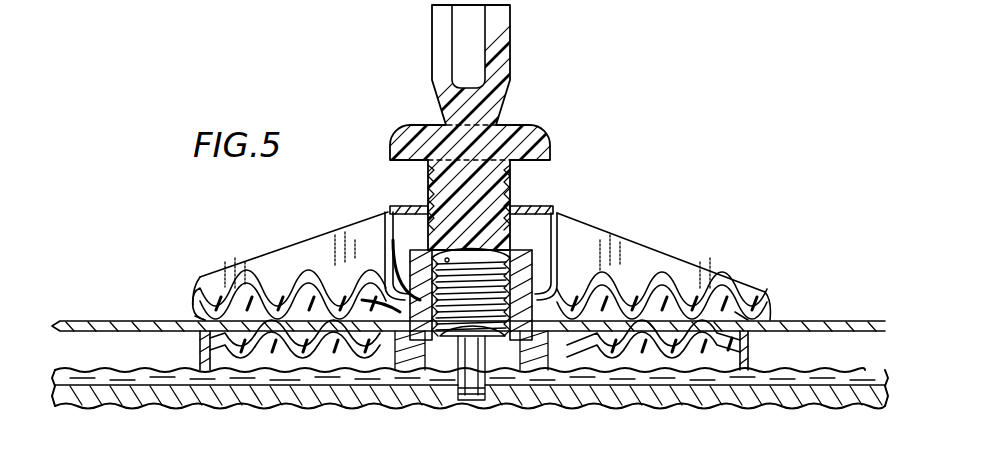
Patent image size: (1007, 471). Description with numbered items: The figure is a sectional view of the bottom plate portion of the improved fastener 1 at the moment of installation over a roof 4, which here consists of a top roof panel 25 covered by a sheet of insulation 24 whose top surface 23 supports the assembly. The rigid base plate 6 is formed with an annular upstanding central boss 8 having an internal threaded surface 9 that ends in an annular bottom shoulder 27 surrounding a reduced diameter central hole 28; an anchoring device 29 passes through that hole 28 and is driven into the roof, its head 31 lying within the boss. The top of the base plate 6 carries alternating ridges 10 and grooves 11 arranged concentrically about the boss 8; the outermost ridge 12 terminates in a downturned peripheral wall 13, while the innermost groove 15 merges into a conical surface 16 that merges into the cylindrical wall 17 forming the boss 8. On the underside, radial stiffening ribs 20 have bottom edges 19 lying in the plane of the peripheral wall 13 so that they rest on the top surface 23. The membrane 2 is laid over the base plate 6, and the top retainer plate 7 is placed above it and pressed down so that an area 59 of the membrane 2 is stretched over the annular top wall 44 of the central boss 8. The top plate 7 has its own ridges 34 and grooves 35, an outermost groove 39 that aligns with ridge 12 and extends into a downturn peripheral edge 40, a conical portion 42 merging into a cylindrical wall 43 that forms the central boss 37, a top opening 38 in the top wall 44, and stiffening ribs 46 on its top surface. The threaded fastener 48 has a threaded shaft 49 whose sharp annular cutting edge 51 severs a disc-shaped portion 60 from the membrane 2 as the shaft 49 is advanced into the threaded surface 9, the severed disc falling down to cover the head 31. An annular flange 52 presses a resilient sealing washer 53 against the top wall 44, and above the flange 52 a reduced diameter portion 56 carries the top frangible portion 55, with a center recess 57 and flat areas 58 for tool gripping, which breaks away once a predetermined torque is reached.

The fastener 1 is at (664, 195).
The membrane 2 is at (92, 320).
The roof 4 is at (170, 410).
The base plate 6 is at (474, 383).
The top retainer plate 7 is at (466, 261).
The central boss 8 is at (392, 278).
The internal threaded surface 9 is at (526, 336).
The ridges 10 is at (320, 358).
The grooves 11 is at (705, 352).
The outermost ridge 12 is at (742, 316).
The peripheral wall 13 is at (748, 350).
The innermost groove 15 is at (585, 358).
The conical surface 16 is at (398, 352).
The cylindrical wall 17 is at (552, 262).
The bottom edges 19 is at (232, 372).
The stiffening ribs 20 is at (628, 354).
The top surface 23 is at (842, 368).
The sheet of insulation 24 is at (803, 386).
The top roof panel 25 is at (70, 398).
The annular bottom shoulder 27 is at (404, 350).
The central hole 28 is at (455, 352).
The anchoring device 29 is at (468, 400).
The head 31 is at (537, 346).
The ridges 34 is at (661, 311).
The grooves 35 is at (271, 282).
The central boss 37 is at (568, 238).
The top opening 38 is at (392, 210).
The outermost groove 39 is at (735, 300).
The downturn peripheral edge 40 is at (200, 318).
The conical portion 42 is at (368, 298).
The cylindrical wall 43 is at (383, 228).
The annular top wall 44 is at (552, 222).
The stiffening ribs 46 is at (228, 280).
The threaded fastener 48 is at (532, 104).
The threaded shaft 49 is at (511, 190).
The annular cutting edge 51 is at (447, 253).
The annular flange 52 is at (410, 140).
The resilient sealing washer 53 is at (405, 208).
The top frangible portion 55 is at (510, 170).
The reduced diameter portion 56 is at (440, 122).
The center recess 57 is at (462, 30).
The flat areas 58 is at (512, 62).
The stretched area 59 is at (560, 248).
The disc-shaped portion 60 is at (500, 176).